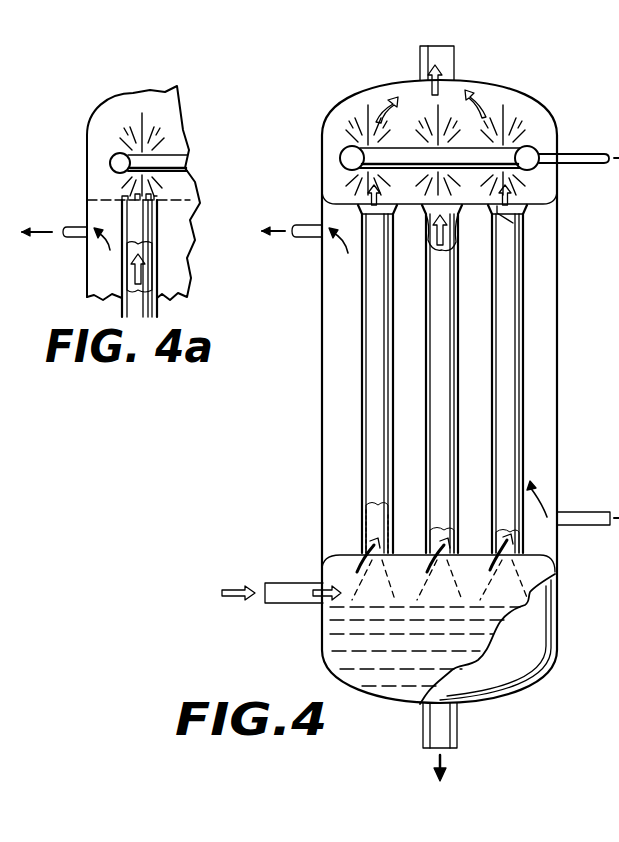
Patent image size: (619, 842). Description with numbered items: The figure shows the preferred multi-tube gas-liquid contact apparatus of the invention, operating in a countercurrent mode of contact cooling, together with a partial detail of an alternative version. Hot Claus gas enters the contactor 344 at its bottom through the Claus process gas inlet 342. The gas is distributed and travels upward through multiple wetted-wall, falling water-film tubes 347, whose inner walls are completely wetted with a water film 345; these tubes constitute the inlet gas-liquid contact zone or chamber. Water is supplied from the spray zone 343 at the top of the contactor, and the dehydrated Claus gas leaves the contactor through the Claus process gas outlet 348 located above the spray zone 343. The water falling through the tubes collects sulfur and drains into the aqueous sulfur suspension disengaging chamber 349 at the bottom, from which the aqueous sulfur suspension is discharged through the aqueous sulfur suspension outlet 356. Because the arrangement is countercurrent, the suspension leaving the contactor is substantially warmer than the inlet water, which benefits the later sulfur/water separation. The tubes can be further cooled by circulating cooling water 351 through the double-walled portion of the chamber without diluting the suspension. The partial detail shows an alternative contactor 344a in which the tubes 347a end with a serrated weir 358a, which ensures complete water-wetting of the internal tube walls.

In FIG. 4, the Claus process gas inlet 342 is at (283, 581).
In FIG. 4, the spray zone 343 is at (530, 146).
In FIG. 4, the contactor 344 is at (322, 276).
In FIG. 4, the water film 345 is at (496, 216).
In FIG. 4, the wetted-wall, falling water-film tubes 347 is at (362, 310).
In FIG. 4, the Claus process gas outlet 348 is at (456, 63).
In FIG. 4, the aqueous sulfur suspension disengaging chamber 349 is at (340, 662).
In FIG. 4, the cooling water 351 is at (584, 511).
In FIG. 4, the aqueous sulfur suspension outlet 356 is at (461, 738).
In FIG. 4a, the contactor 344a is at (87, 275).
In FIG. 4a, the tubes 347a is at (157, 302).
In FIG. 4a, the serrated weir 358a is at (125, 200).